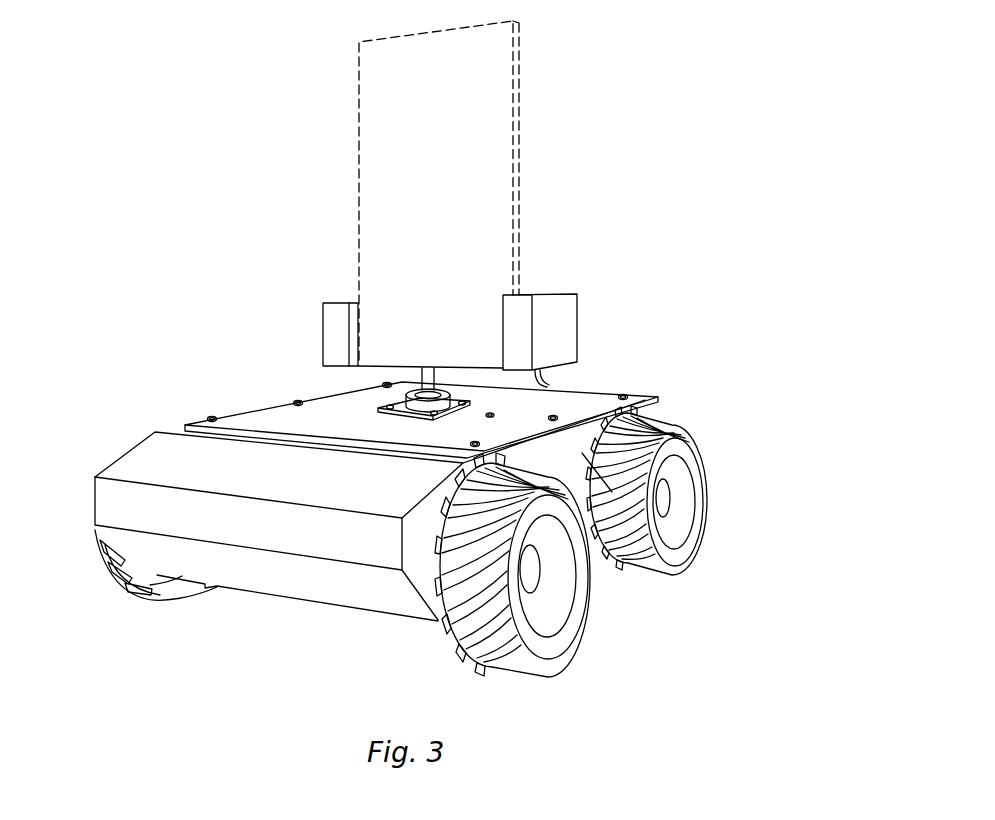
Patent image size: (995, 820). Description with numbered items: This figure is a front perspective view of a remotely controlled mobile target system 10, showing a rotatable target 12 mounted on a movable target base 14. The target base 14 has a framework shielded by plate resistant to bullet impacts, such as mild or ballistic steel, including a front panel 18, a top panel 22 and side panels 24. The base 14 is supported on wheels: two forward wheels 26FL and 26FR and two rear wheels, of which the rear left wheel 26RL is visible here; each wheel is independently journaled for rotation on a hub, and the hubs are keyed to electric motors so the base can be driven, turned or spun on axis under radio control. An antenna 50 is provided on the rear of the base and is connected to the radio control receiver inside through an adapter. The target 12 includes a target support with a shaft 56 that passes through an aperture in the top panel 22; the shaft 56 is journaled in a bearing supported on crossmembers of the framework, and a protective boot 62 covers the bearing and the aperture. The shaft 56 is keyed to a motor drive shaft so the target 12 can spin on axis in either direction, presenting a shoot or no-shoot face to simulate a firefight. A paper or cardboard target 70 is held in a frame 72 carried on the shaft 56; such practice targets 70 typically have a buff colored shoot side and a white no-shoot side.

The remotely controlled mobile target system 10 is at (632, 243).
The rotatable target 12 is at (518, 218).
The movable target base 14 is at (608, 393).
The front panel 18 is at (292, 587).
The top panel 22 is at (290, 420).
The side panels 24 is at (592, 550).
The front left wheel 26FL is at (487, 666).
The front right wheel 26FR is at (172, 603).
The rear left wheel 26RL is at (705, 513).
The antenna 50 is at (547, 387).
The shaft 56 is at (433, 378).
The protective boot 62 is at (422, 404).
The paper or cardboard target 70 is at (519, 125).
The frame 72 is at (577, 328).